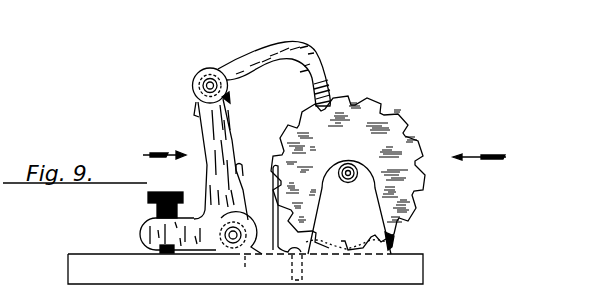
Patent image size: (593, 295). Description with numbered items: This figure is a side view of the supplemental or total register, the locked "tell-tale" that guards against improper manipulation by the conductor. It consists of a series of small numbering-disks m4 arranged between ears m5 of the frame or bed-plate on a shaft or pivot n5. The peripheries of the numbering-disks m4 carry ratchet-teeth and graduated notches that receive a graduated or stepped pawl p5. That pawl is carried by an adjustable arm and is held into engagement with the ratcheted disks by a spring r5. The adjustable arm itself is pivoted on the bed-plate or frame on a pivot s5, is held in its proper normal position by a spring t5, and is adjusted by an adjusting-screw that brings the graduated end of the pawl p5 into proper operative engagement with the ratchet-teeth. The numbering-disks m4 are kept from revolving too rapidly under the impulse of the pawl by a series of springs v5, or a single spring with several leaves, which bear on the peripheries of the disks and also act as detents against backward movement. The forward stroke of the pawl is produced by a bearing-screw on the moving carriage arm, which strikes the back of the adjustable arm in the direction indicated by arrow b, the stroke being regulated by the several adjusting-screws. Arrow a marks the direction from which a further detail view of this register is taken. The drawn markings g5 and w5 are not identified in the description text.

The numbering-disks m4 is at (348, 173).
The ears m5 is at (366, 203).
The shaft or pivot n5 is at (346, 181).
The spring r5 is at (320, 60).
The graduated or stepped pawl p5 is at (219, 69).
The lever arm g5 is at (225, 139).
The spring t5 is at (242, 171).
The springs v5 is at (274, 194).
The pivot s5 is at (229, 247).
The adjusting screw w5 is at (148, 202).
The arrow a is at (532, 150).
The arrow b is at (157, 155).